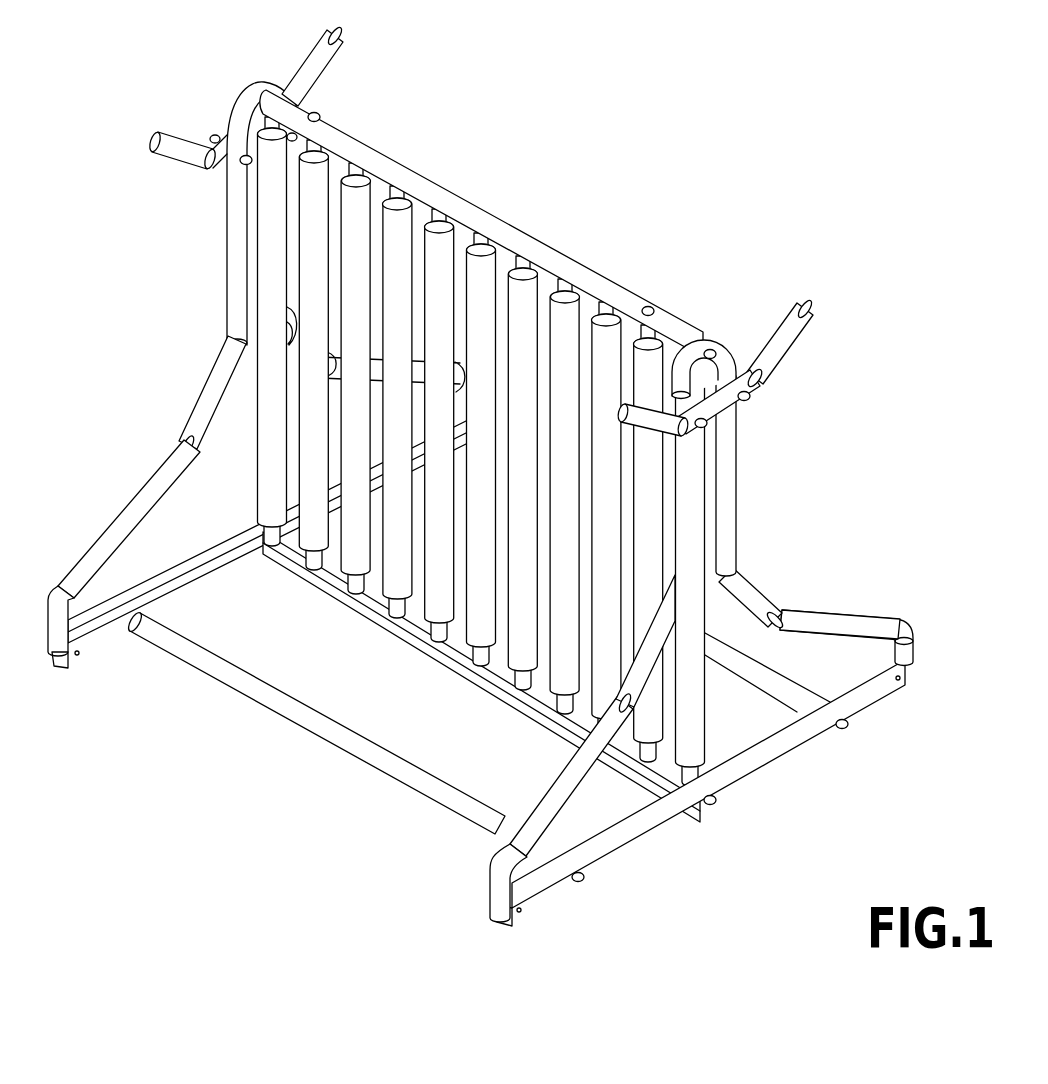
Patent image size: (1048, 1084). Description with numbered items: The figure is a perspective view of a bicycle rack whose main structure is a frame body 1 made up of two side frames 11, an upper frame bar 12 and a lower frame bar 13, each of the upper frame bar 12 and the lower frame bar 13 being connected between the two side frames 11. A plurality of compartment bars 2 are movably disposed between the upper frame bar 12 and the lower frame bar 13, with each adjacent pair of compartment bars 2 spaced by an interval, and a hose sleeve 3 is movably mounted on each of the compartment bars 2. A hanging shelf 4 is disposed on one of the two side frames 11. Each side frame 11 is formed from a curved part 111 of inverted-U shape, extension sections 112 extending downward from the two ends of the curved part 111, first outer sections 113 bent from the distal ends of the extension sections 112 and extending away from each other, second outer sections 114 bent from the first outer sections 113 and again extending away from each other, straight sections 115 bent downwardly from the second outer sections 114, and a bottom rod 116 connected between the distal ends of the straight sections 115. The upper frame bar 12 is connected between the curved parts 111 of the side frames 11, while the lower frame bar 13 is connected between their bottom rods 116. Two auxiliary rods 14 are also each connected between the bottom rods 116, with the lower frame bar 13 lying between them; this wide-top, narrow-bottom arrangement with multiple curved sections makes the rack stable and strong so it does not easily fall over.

The frame body 1 is at (527, 476).
The compartment bars 2 is at (431, 213).
The hose sleeves 3 is at (448, 247).
The hanging shelf 4 is at (806, 346).
The side frames 11 is at (748, 584).
The upper frame bar 12 is at (345, 140).
The lower frame bar 13 is at (330, 583).
The auxiliary rods 14 is at (293, 713).
The curved part 111 is at (712, 350).
The extension sections 112 is at (731, 453).
The first outer sections 113 is at (755, 592).
The second outer sections 114 is at (867, 620).
The straight sections 115 is at (908, 655).
The bottom rod 116 is at (880, 700).